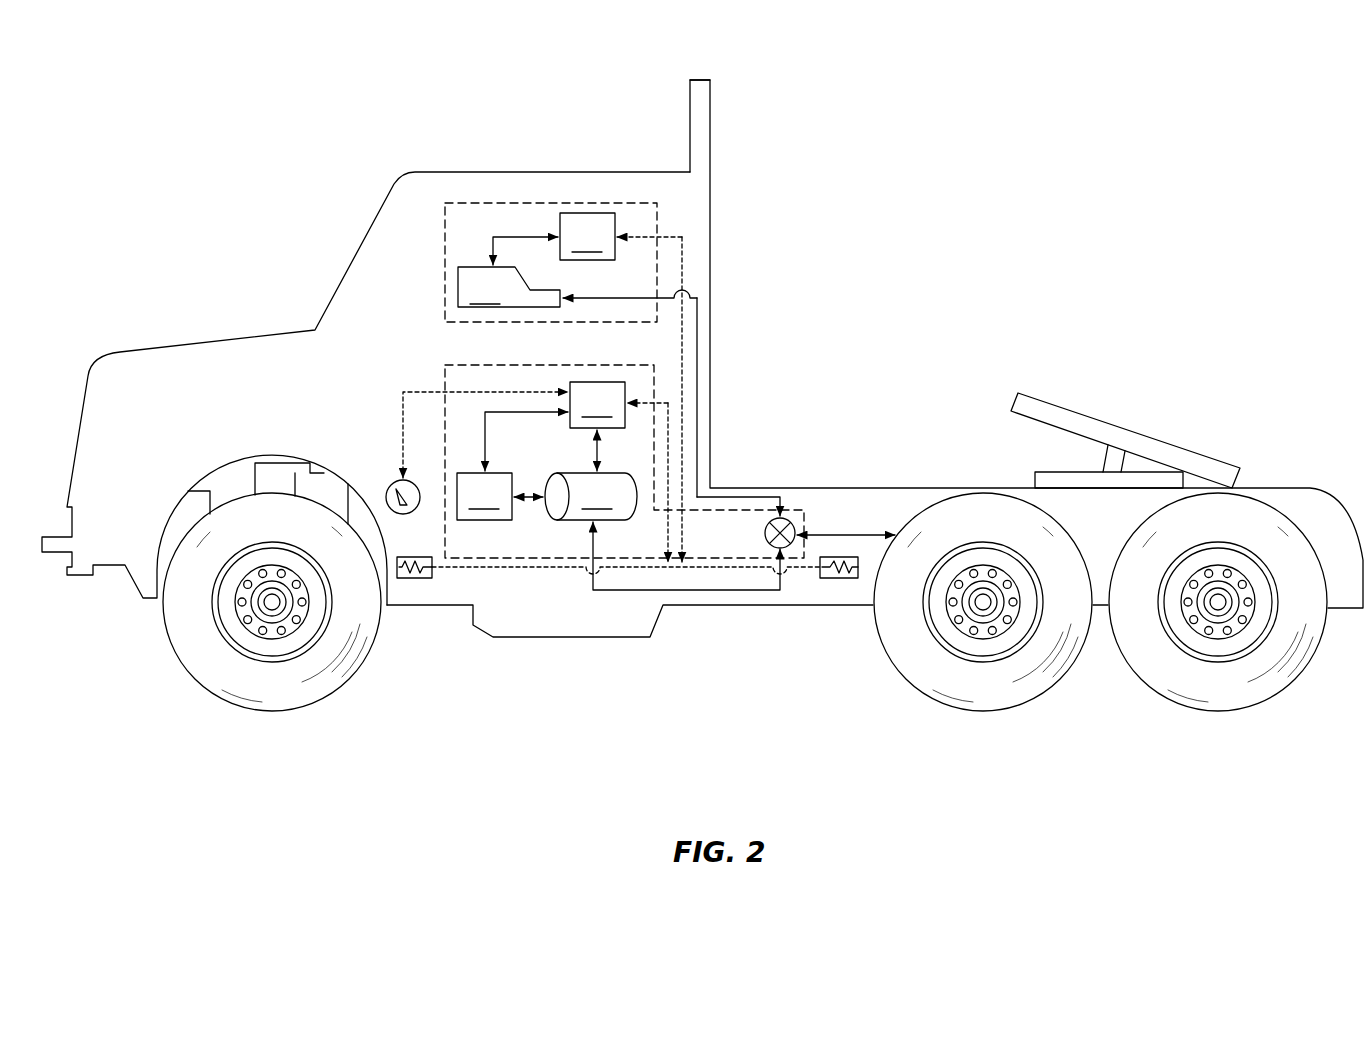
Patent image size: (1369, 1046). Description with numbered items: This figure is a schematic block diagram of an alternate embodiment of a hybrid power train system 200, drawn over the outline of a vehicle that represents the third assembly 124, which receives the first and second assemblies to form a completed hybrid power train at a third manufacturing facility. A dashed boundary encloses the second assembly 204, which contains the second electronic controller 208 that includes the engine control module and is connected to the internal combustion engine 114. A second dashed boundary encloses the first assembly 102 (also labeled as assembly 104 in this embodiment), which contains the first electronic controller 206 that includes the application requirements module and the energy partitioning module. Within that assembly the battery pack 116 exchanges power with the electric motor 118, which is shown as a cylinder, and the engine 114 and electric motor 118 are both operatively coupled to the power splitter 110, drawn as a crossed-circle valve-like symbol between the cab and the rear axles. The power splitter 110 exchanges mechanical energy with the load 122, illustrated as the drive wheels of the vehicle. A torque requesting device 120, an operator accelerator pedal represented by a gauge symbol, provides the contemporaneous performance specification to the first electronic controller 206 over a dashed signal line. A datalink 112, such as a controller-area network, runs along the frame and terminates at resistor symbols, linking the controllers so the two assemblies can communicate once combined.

The system 200 is at (346, 98).
The second assembly 204 is at (440, 258).
The second electronic controller 208 is at (587, 239).
The internal combustion engine 114 is at (577, 287).
The third assembly 124 is at (712, 208).
The second assembly 104 is at (440, 375).
The first electronic controller 206 is at (619, 426).
The battery pack 116 is at (512, 466).
The electric motor 118 is at (662, 531).
The torque requesting device 120 is at (390, 486).
The first assembly 102 is at (793, 510).
The power splitter 110 is at (800, 528).
The datalink 112 is at (500, 568).
The load 122 is at (983, 712).